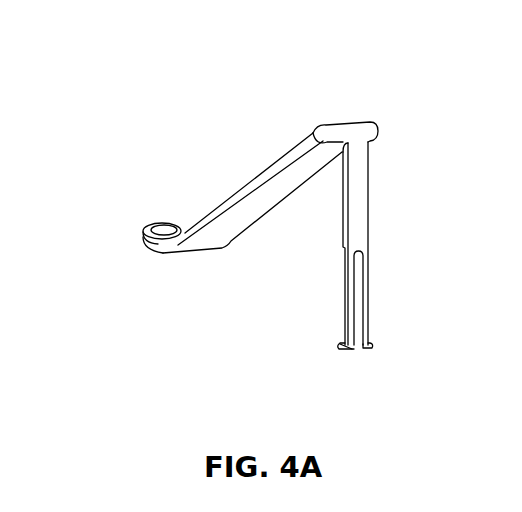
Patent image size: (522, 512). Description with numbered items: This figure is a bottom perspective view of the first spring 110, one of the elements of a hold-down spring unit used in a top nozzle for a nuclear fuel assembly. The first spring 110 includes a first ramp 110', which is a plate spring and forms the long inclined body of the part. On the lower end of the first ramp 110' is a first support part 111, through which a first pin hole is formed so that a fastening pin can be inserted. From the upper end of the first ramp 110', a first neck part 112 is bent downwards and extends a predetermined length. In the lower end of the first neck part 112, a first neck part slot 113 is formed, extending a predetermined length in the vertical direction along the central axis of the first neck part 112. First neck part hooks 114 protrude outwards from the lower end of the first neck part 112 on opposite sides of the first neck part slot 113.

The first spring 110 is at (265, 201).
The first ramp 110' is at (252, 180).
The first support part 111 is at (152, 243).
The first neck part 112 is at (362, 199).
The first neck part slot 113 is at (358, 289).
The first neck part hooks 114 is at (340, 347).